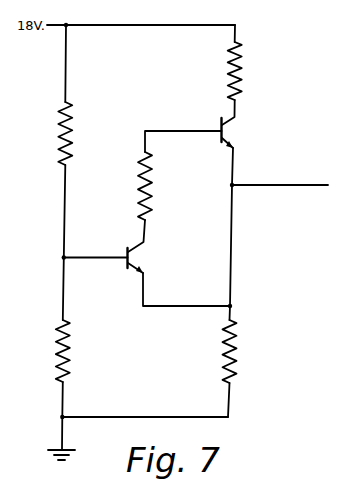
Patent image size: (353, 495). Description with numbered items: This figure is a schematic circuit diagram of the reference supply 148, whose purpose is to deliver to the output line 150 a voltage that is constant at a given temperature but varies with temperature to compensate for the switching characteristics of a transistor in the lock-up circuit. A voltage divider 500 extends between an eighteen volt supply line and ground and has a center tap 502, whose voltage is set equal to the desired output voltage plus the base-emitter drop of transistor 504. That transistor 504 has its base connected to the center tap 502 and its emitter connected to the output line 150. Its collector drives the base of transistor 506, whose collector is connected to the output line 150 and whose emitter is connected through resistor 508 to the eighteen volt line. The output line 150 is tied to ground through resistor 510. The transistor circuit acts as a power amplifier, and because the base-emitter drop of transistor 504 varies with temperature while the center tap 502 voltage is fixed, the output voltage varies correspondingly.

The reference supply 148 is at (238, 257).
The output line 150 is at (252, 185).
The voltage divider 500 is at (65, 180).
The center tap 502 is at (65, 258).
The transistor 504 is at (126, 251).
The transistor 506 is at (219, 122).
The resistor 508 is at (237, 92).
The resistor 510 is at (239, 363).